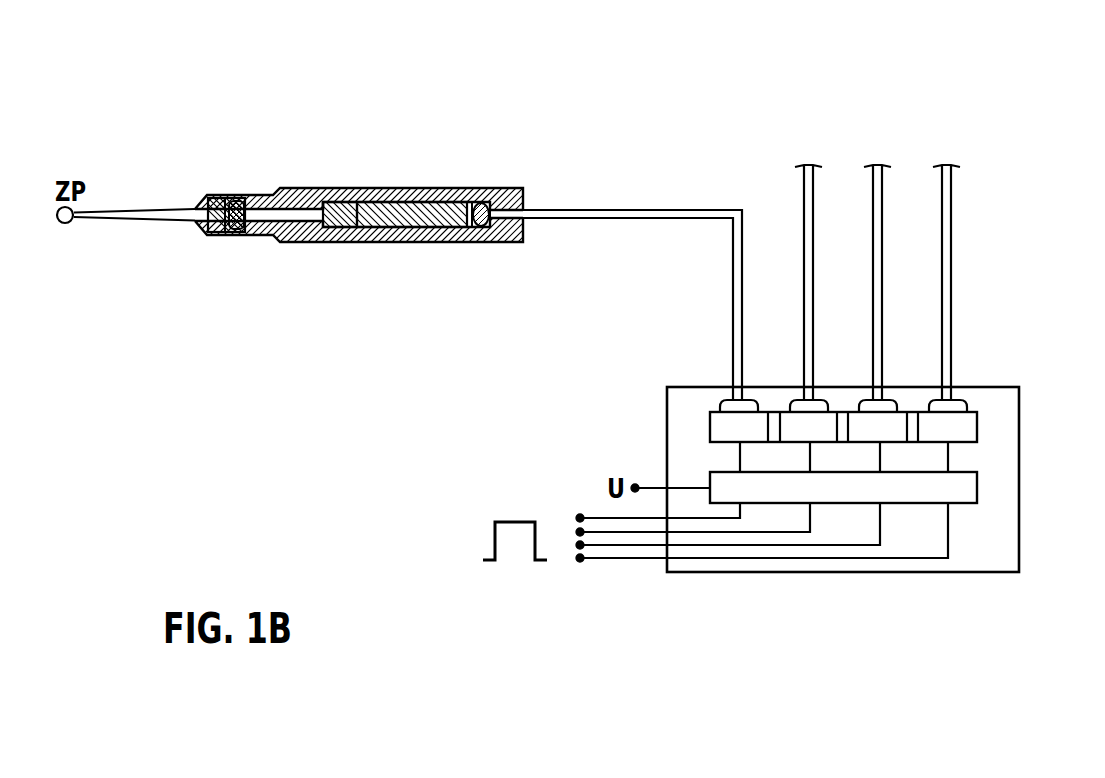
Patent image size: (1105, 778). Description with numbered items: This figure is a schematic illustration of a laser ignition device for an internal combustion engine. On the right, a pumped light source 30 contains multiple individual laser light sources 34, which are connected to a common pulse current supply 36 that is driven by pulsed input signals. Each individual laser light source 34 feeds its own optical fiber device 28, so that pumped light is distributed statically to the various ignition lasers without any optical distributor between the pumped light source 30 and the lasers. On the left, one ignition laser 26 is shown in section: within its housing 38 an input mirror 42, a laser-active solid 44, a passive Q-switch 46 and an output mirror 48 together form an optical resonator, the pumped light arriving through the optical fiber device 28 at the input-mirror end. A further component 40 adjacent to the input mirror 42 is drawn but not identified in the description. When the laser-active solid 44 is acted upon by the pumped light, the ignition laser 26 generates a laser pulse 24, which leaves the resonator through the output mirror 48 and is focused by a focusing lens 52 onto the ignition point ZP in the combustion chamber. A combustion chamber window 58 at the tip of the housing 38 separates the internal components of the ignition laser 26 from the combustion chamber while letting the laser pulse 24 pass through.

The laser pulse 24 is at (133, 218).
The ignition laser 26 is at (413, 190).
The optical fiber device 28 is at (802, 237).
The pumped light source 30 is at (985, 573).
The individual laser light source 34 is at (797, 432).
The pulse current supply 36 is at (957, 488).
The housing 38 is at (413, 243).
The seal 40 is at (483, 243).
The input mirror 42 is at (472, 202).
The laser-active solid 44 is at (378, 202).
The passive Q-switch 46 is at (347, 242).
The output mirror 48 is at (316, 208).
The focusing lens 52 is at (238, 233).
The combustion chamber window 58 is at (215, 196).